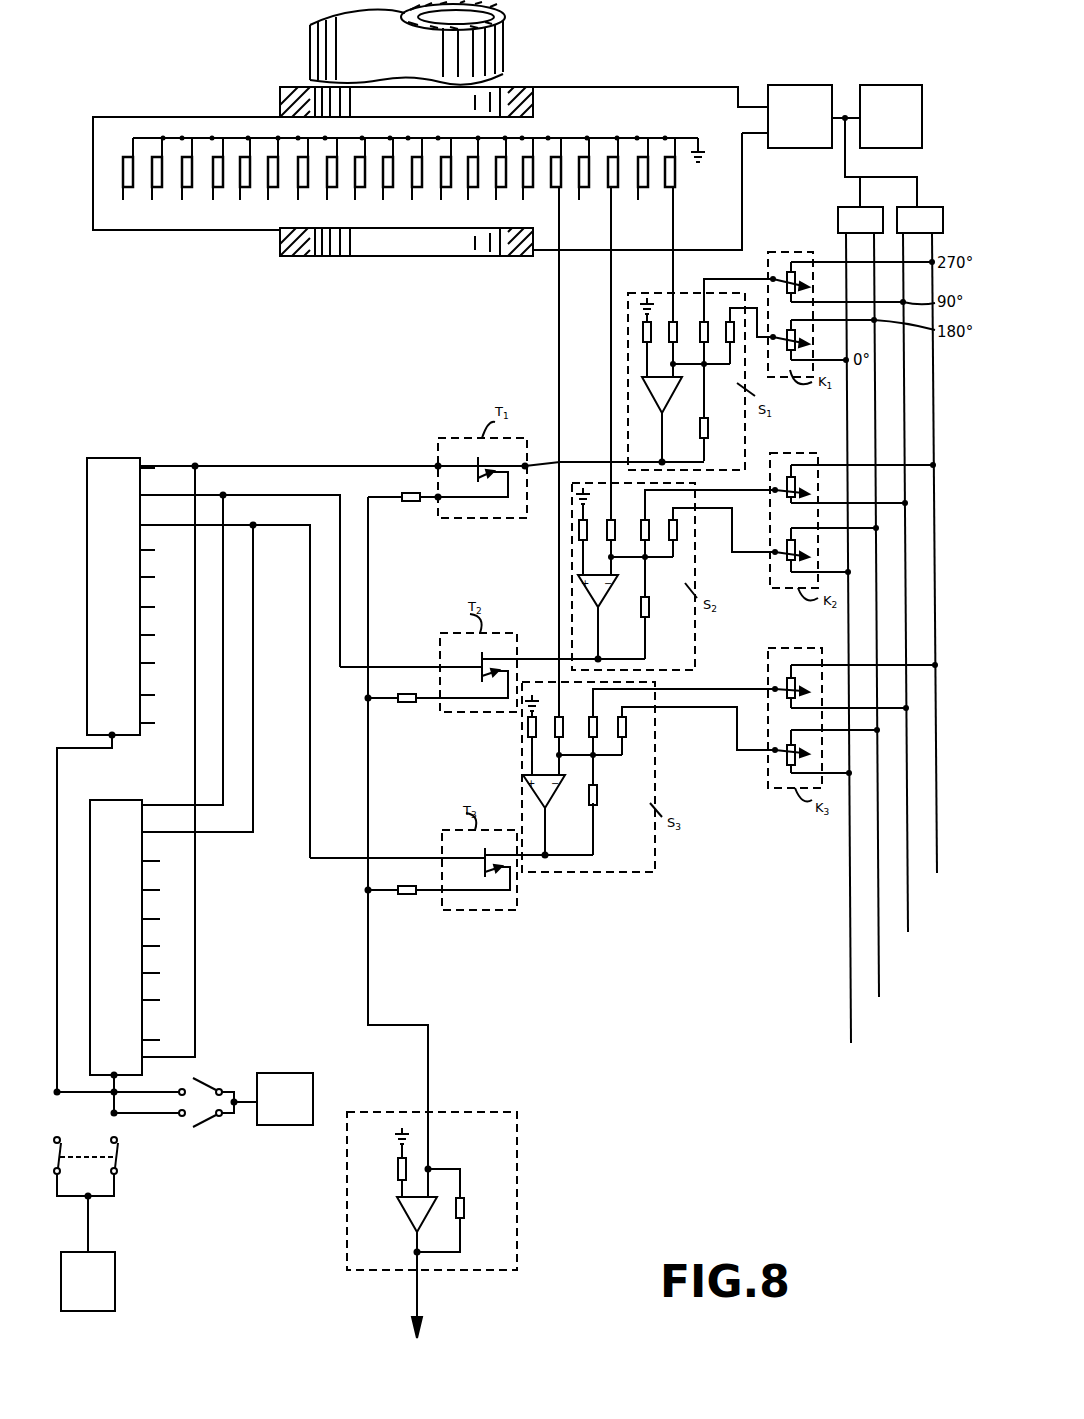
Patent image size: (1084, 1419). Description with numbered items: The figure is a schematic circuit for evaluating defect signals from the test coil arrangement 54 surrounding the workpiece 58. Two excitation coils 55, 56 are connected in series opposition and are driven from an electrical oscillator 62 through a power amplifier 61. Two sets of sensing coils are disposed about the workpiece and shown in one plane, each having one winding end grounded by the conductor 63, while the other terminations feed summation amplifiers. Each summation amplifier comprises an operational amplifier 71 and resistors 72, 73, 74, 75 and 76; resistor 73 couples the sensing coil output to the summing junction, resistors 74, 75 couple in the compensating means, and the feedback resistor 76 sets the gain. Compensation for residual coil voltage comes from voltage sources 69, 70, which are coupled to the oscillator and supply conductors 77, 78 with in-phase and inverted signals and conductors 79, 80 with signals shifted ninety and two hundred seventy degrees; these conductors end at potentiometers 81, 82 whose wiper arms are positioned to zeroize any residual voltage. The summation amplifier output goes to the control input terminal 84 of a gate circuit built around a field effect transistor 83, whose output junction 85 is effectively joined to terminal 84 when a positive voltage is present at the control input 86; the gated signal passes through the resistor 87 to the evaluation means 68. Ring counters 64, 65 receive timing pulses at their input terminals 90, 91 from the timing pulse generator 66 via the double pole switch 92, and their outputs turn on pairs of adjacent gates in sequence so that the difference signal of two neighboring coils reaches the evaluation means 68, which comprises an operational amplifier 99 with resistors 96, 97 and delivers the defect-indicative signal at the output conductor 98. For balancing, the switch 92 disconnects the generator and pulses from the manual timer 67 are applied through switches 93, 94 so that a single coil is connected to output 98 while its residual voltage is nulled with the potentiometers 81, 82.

The test coil arrangement 54 is at (222, 292).
The excitation coil 55 is at (520, 87).
The excitation coil 56 is at (525, 257).
The workpiece 58 is at (403, 57).
The power amplifier 61 is at (800, 116).
The electrical oscillator 62 is at (891, 116).
The conductor 63 is at (212, 136).
The ring counter 64 is at (126, 593).
The ring counter 65 is at (128, 932).
The timing pulse generator 66 is at (88, 1281).
The manual timer 67 is at (285, 1099).
The evaluation means 68 is at (461, 1225).
The voltage source 69 is at (860, 220).
The voltage source 70 is at (920, 220).
The operational amplifier 71 is at (656, 403).
The resistor 72 is at (643, 329).
The resistor 73 is at (684, 346).
The resistor 74 is at (736, 321).
The resistor 75 is at (723, 336).
The feedback resistor 76 is at (717, 412).
The conductor 77 is at (850, 937).
The conductor 78 is at (879, 890).
The conductor 79 is at (908, 843).
The conductor 80 is at (937, 803).
The potentiometer 81 is at (796, 338).
The potentiometer 82 is at (796, 280).
The field effect transistor 83 is at (478, 462).
The control input terminal 84 is at (530, 452).
The output junction 85 is at (441, 500).
The control input 86 is at (440, 462).
The resistor 87 is at (411, 502).
The timing input terminal 90 is at (114, 740).
The timing input terminal 91 is at (117, 1074).
The double pole switch 92 is at (120, 1167).
The switch 93 is at (207, 1077).
The switch 94 is at (207, 1119).
The resistor 96 is at (397, 1173).
The resistor 97 is at (467, 1212).
The output conductor 98 is at (433, 1309).
The operational amplifier 99 is at (412, 1215).